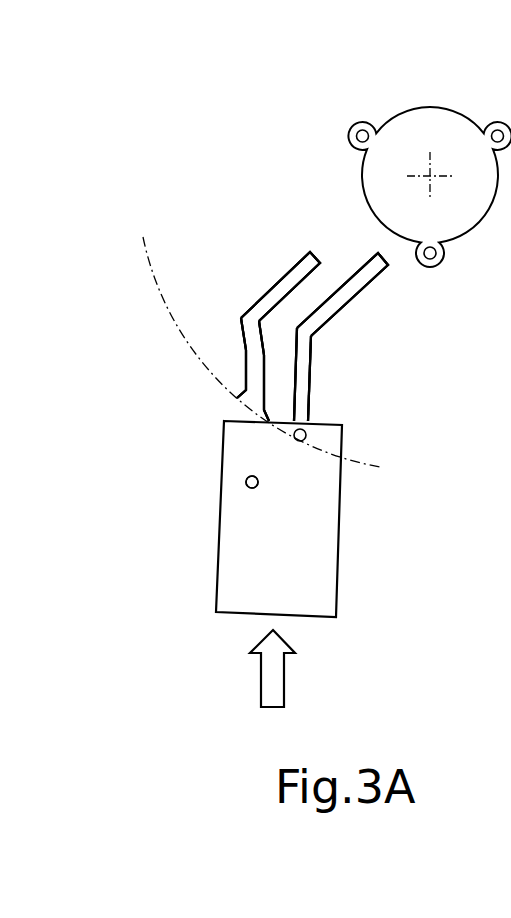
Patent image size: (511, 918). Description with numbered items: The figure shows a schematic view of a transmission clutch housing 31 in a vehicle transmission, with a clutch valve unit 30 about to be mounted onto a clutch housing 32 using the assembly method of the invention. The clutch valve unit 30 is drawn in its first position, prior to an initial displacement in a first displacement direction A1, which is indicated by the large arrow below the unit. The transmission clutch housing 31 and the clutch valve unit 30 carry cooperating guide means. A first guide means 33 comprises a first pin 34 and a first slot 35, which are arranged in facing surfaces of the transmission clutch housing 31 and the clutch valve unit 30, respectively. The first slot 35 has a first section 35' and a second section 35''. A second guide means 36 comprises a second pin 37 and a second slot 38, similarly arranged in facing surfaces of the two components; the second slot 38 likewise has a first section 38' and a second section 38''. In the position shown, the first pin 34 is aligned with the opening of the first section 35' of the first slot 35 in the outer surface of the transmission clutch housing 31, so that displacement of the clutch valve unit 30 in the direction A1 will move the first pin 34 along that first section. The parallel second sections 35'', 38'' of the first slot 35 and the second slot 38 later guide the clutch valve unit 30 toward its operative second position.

The clutch valve unit 30 is at (232, 577).
The transmission clutch housing 31 is at (168, 313).
The clutch housing 32 is at (309, 127).
The first guide means 33 is at (433, 308).
The first pin 34 is at (305, 441).
The first slot 35 is at (360, 337).
The first section of the first slot 35' is at (363, 384).
The second section of the first slot 35'' is at (367, 303).
The second guide means 36 is at (141, 405).
The second pin 37 is at (247, 488).
The second slot 38 is at (229, 371).
The first section of the second slot 38' is at (203, 426).
The second section of the second slot 38'' is at (230, 348).
The first displacement direction A1 is at (277, 677).